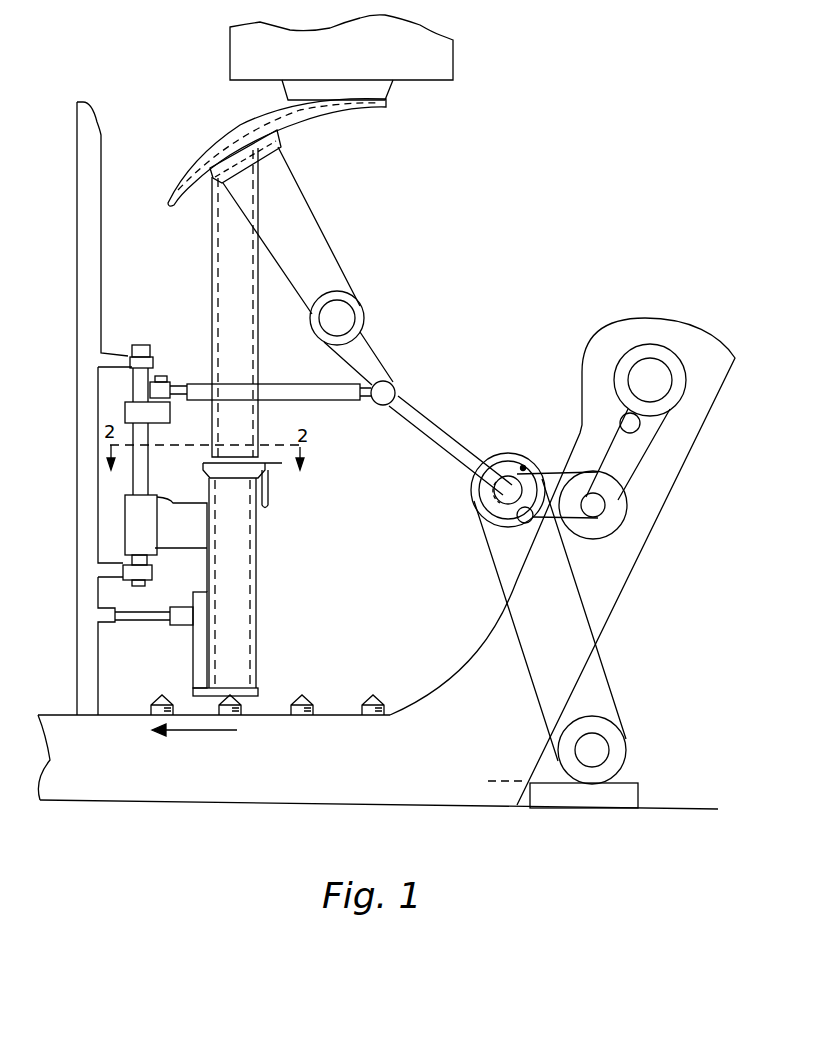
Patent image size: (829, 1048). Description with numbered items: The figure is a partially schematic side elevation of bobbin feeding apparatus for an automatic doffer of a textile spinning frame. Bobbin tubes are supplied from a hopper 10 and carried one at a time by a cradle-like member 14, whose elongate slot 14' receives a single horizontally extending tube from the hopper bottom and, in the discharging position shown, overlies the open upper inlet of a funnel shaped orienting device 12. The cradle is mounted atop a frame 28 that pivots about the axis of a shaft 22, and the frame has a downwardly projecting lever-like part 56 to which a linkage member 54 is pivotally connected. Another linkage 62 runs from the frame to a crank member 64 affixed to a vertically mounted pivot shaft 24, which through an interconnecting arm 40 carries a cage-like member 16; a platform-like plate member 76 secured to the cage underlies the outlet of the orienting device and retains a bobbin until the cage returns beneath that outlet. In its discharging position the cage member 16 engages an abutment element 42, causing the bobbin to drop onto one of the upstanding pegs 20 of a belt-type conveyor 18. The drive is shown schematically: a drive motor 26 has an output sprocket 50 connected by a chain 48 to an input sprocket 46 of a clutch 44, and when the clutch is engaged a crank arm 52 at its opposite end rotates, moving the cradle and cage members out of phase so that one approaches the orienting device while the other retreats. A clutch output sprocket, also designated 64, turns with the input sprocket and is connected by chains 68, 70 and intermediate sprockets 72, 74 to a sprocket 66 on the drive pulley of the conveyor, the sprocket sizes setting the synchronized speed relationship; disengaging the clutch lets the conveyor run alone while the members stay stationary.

The hopper 10 is at (443, 68).
The cradle-like member 14 is at (264, 153).
The elongate slot 14' is at (244, 140).
The funnel shaped orienting device 12 is at (218, 246).
The frame 28 is at (305, 250).
The shaft 22 is at (342, 312).
The lever-like part 56 is at (375, 373).
The linkage member 54 is at (470, 425).
The linkage 62 is at (328, 399).
The crank member / clutch output sprocket 64 is at (150, 418).
The pivot shaft 24 is at (152, 335).
The interconnecting arm 40 is at (197, 490).
The platform-like plate member 76 is at (282, 468).
The cage-like member 16 is at (240, 608).
The abutment element 42 is at (145, 616).
The bobbin receiving pegs 20 is at (242, 708).
The belt-type conveyor 18 is at (465, 675).
The input sprocket 46 is at (500, 457).
The clutch 44 is at (498, 505).
The crank arm 52 is at (500, 527).
The chain 68 is at (550, 522).
The intermediate sprocket 72 is at (607, 528).
The intermediate sprocket 74 is at (605, 503).
The chain 70 is at (637, 452).
The sprocket 66 is at (648, 375).
The chain 48 is at (517, 618).
The drive motor 26 is at (612, 738).
The output sprocket 50 is at (597, 752).